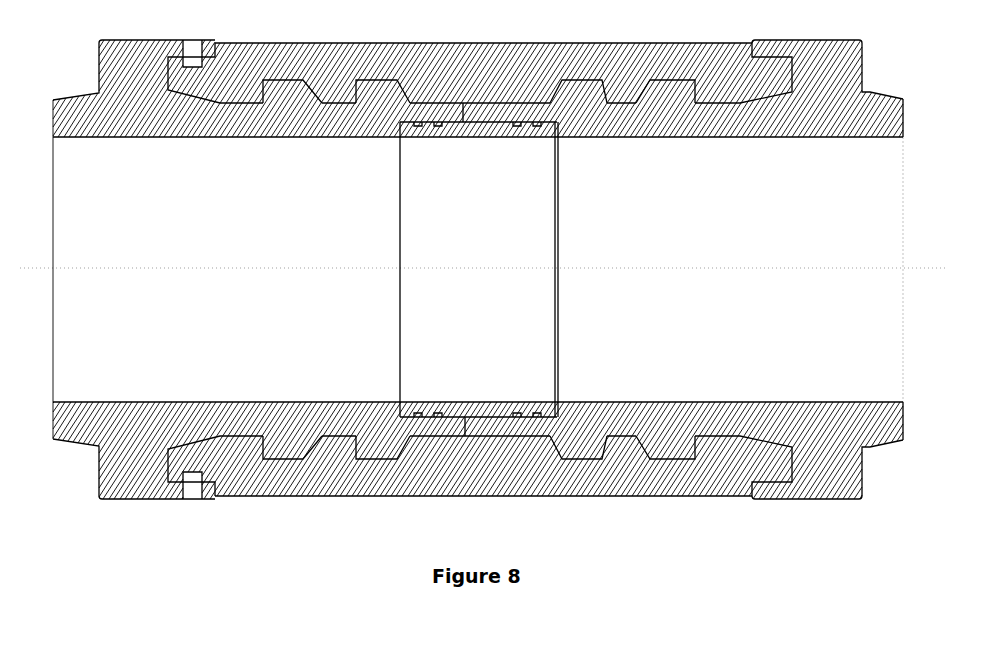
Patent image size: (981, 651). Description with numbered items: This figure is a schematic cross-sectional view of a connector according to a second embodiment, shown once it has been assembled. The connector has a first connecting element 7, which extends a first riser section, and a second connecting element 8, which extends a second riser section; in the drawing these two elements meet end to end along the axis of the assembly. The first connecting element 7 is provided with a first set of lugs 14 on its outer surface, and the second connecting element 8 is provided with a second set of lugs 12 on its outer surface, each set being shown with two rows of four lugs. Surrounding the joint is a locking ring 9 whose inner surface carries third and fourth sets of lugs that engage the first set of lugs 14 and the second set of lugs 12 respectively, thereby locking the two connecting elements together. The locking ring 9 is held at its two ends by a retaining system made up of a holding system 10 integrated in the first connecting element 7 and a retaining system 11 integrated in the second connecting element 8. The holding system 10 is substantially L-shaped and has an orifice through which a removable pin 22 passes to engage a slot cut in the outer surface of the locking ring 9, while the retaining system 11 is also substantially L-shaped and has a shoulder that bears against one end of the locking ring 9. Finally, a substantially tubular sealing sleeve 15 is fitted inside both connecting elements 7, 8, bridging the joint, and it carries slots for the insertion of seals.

The first connecting element 7 is at (243, 398).
The second connecting element 8 is at (756, 410).
The locking ring 9 is at (470, 53).
The holding system 10 is at (130, 455).
The retaining system 11 is at (820, 480).
The second set of lugs 12 is at (668, 115).
The first set of lugs 14 is at (288, 115).
The sealing sleeve 15 is at (485, 403).
The removable pin 22 is at (186, 492).